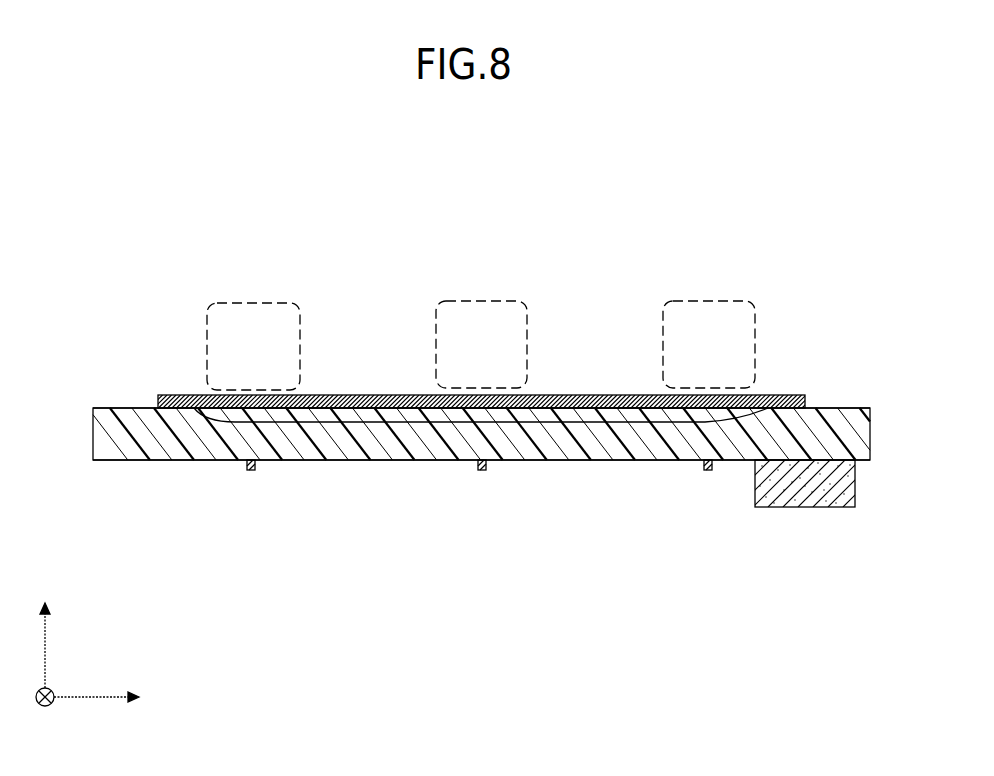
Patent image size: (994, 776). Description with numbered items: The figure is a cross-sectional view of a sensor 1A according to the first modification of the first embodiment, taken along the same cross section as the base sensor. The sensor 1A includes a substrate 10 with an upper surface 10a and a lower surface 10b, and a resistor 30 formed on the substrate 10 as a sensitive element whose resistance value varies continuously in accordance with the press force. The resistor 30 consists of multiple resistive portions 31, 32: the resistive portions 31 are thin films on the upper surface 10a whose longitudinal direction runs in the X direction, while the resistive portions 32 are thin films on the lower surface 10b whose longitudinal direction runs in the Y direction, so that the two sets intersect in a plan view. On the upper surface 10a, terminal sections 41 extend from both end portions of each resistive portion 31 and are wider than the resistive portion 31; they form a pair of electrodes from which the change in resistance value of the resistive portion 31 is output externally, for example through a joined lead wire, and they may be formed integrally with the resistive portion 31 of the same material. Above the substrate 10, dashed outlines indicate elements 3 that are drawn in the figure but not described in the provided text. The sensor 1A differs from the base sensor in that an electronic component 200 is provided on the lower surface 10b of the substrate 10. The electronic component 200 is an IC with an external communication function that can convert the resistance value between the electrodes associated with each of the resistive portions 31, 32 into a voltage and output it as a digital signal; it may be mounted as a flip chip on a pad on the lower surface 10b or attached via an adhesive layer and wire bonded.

The sensor 1A is at (53, 218).
The semiconductor chip 3 is at (706, 300).
The substrate 10 is at (112, 430).
The upper surface 10a is at (108, 408).
The lower surface 10b is at (110, 461).
The resistor 30 is at (481, 500).
The resistive portions 31 is at (414, 422).
The resistive portions 32 is at (378, 540).
The terminal sections 41 is at (196, 393).
The electronic component 200 is at (840, 478).